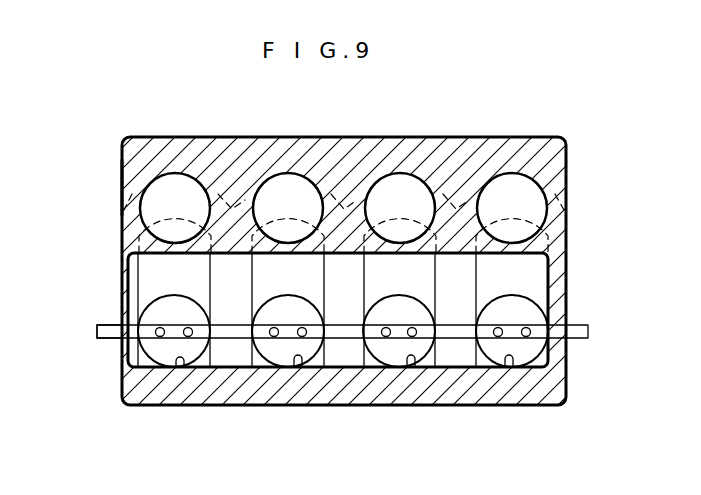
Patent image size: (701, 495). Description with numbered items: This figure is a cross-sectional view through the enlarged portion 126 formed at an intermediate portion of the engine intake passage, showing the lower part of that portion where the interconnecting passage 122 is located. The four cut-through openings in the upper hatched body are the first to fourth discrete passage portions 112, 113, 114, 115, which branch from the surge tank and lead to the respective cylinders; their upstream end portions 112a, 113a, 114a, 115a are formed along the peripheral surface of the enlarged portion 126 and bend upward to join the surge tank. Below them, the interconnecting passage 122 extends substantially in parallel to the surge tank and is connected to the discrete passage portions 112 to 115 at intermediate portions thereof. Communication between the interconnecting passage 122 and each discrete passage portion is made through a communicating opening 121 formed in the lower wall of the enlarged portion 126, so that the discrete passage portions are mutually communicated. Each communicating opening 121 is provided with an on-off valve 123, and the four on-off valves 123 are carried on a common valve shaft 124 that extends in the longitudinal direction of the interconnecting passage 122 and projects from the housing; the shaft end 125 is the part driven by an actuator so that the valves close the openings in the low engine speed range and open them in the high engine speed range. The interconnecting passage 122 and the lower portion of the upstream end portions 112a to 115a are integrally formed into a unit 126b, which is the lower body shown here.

The first discrete passage portion 112 is at (180, 185).
The second discrete passage portion 113 is at (295, 185).
The third discrete passage portion 114 is at (403, 185).
The fourth discrete passage portion 115 is at (515, 185).
The upstream end portion 112a is at (133, 352).
The upstream end portion 113a is at (250, 357).
The upstream end portion 114a is at (361, 360).
The upstream end portion 115a is at (471, 360).
The communicating opening 121 is at (176, 361).
The interconnecting passage 122 is at (545, 278).
The on-off valve 123 is at (172, 360).
The valve shaft 124 is at (110, 323).
The shaft end 125 is at (94, 313).
The enlarged portion 126 is at (134, 130).
The unit 126b is at (122, 188).